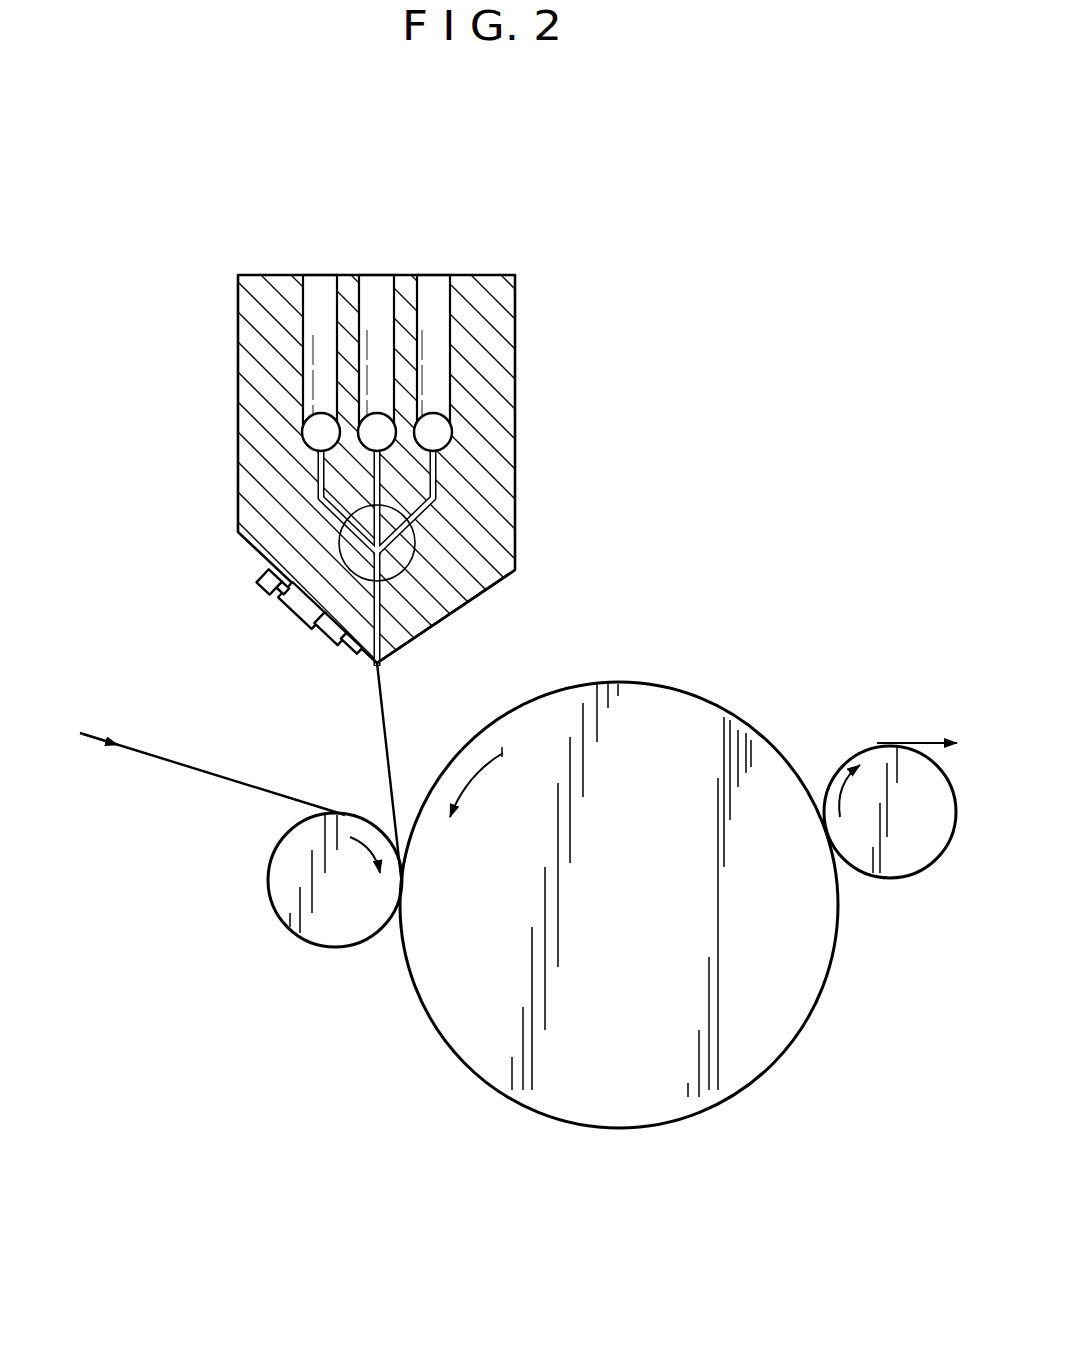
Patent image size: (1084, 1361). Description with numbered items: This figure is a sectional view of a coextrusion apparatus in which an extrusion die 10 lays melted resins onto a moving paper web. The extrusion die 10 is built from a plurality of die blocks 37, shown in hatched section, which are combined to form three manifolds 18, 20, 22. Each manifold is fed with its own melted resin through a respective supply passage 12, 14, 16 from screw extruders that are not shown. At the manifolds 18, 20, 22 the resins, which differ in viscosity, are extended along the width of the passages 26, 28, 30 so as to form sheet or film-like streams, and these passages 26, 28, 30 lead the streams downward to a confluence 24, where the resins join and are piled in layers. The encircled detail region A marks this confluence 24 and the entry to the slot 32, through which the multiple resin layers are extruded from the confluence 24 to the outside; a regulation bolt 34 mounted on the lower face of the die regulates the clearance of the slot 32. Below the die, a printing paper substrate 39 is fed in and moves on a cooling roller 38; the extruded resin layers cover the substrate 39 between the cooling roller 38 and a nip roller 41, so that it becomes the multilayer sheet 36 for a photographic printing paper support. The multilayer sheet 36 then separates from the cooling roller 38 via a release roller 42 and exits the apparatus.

The extrusion die 10 is at (503, 253).
The supply passage 12 is at (323, 290).
The supply passage 14 is at (380, 290).
The supply passage 16 is at (434, 290).
The manifold 18 is at (312, 434).
The manifold 20 is at (378, 413).
The manifold 22 is at (443, 423).
The confluence 24 is at (490, 588).
The passage 26 is at (320, 470).
The passage 28 is at (382, 470).
The passage 30 is at (437, 532).
The slot 32 is at (383, 632).
The regulation bolt 34 is at (268, 580).
The multilayer sheet 36 is at (927, 743).
The die block 37 is at (272, 332).
The cooling roller 38 is at (615, 1103).
The printing paper substrate 39 is at (152, 755).
The nip roller 41 is at (327, 930).
The release roller 42 is at (888, 870).
The detail region A is at (415, 569).